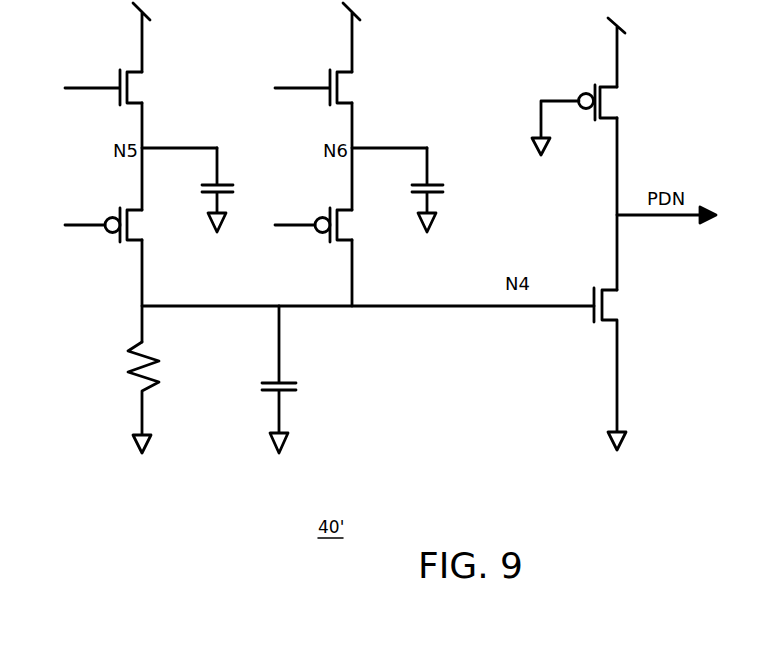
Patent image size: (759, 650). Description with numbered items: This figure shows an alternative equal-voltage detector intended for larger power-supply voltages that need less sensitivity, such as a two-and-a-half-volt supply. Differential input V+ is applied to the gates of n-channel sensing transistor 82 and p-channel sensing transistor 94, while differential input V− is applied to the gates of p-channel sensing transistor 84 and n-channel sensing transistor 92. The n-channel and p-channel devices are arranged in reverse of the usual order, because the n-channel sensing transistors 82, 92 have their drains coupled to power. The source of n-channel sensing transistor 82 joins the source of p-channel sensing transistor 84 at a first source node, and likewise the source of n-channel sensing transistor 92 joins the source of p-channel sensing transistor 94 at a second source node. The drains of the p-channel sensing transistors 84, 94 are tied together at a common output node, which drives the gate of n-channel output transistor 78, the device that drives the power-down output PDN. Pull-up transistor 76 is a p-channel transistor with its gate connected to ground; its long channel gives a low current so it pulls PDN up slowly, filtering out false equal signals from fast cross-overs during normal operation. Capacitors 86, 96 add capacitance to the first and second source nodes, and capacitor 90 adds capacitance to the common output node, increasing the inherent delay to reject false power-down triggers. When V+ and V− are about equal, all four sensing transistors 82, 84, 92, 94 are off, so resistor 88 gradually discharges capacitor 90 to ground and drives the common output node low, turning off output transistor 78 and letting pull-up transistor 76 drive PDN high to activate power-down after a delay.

The pull-up transistor 76 is at (608, 99).
The n-channel output transistor 78 is at (608, 300).
The n-channel sensing transistor 82 is at (133, 90).
The p-channel sensing transistor 84 is at (133, 228).
The capacitor 86 is at (222, 185).
The resistor 88 is at (160, 375).
The capacitor 90 is at (285, 381).
The n-channel sensing transistor 92 is at (343, 90).
The p-channel sensing transistor 94 is at (343, 228).
The capacitor 96 is at (432, 185).